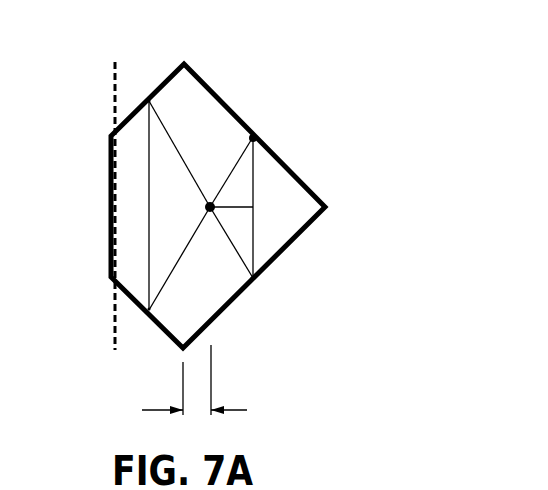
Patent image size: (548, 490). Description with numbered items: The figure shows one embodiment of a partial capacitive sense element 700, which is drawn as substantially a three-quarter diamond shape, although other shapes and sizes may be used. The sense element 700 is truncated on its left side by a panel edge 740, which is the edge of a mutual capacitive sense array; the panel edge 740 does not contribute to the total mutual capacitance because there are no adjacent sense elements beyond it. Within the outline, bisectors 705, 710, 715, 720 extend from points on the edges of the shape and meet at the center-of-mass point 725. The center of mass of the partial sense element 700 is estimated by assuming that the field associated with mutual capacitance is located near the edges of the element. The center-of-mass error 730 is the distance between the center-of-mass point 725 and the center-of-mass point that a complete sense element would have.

The partial capacitive sense element 700 is at (410, 191).
The bisector 705 is at (254, 136).
The bisector 710 is at (253, 280).
The bisector 715 is at (148, 101).
The bisector 720 is at (150, 309).
The center-of-mass point 725 is at (214, 204).
The center-of-mass error 730 is at (211, 392).
The panel edge 740 is at (112, 302).